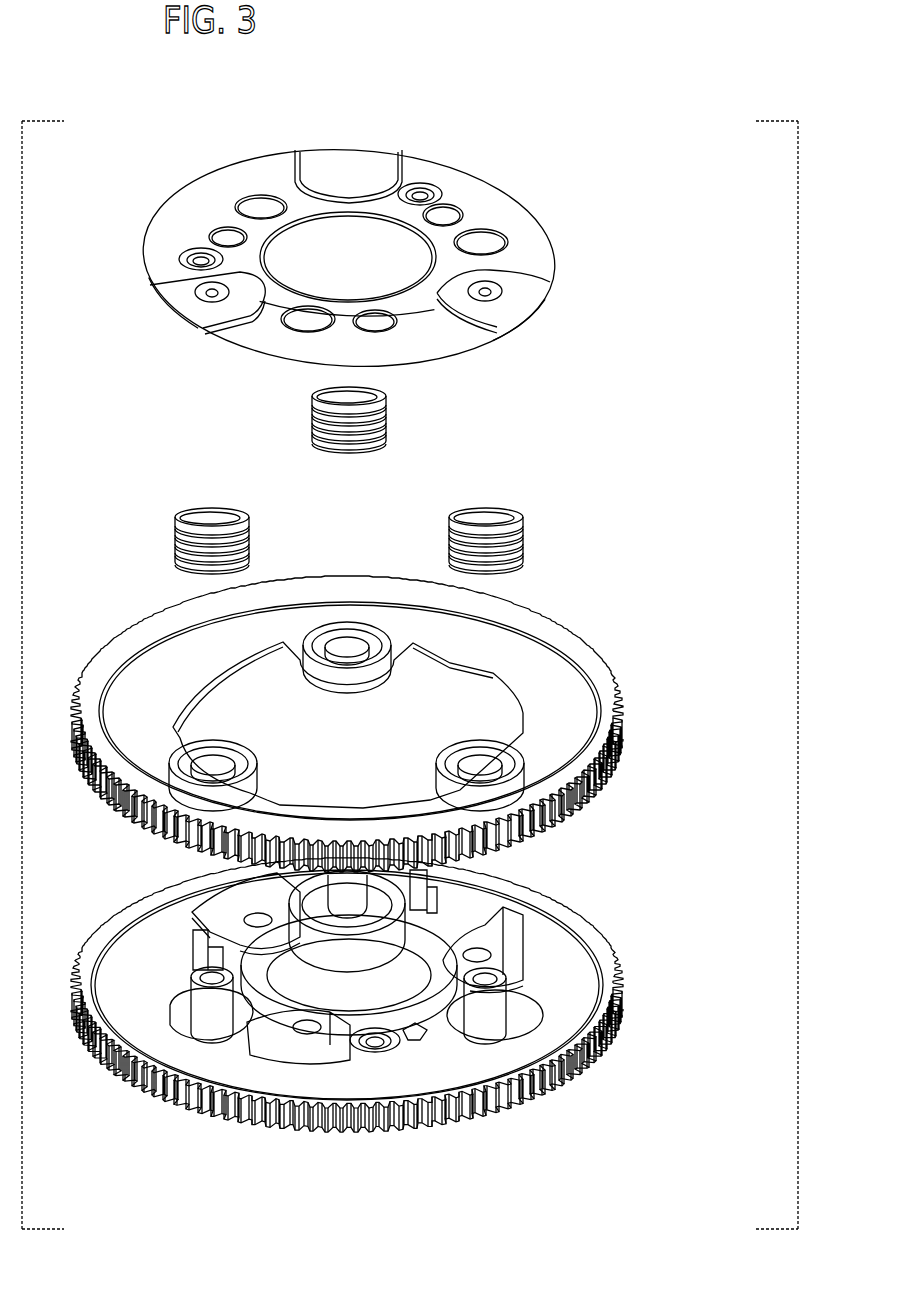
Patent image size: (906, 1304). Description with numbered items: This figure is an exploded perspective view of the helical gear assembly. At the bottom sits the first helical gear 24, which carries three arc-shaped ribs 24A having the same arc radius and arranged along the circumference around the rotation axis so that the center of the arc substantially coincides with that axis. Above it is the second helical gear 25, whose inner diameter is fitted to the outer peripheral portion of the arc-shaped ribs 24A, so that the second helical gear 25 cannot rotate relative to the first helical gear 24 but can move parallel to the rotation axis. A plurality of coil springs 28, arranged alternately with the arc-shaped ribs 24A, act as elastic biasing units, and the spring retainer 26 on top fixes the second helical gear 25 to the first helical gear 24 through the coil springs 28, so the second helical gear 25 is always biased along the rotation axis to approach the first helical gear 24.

The spring retainer 26 is at (477, 213).
The coil spring 28 is at (387, 403).
The second helical gear 25 is at (535, 680).
The first helical gear 24 is at (414, 1035).
The arc-shaped rib 24A is at (500, 973).